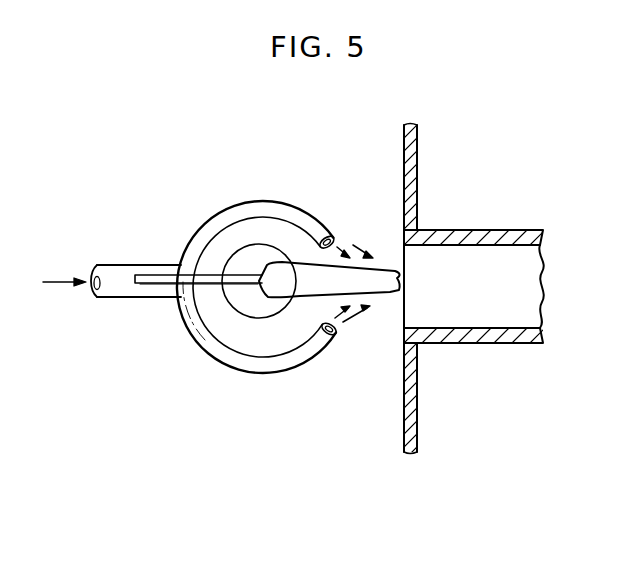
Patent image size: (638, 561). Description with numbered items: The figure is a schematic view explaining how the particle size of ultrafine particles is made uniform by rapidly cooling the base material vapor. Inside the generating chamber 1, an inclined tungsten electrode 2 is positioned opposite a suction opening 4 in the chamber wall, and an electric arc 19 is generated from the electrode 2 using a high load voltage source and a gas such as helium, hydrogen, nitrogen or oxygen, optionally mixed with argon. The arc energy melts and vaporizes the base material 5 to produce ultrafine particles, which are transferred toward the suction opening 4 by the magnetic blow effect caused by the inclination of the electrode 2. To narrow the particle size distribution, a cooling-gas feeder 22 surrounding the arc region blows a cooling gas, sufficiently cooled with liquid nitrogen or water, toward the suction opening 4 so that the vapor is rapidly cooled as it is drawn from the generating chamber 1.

The generating chamber 1 is at (418, 137).
The electrode 2 is at (207, 268).
The suction opening 4 is at (402, 262).
The base material 5 is at (243, 318).
The electric arc 19 is at (380, 299).
The cooling-gas feeder 22 is at (248, 373).